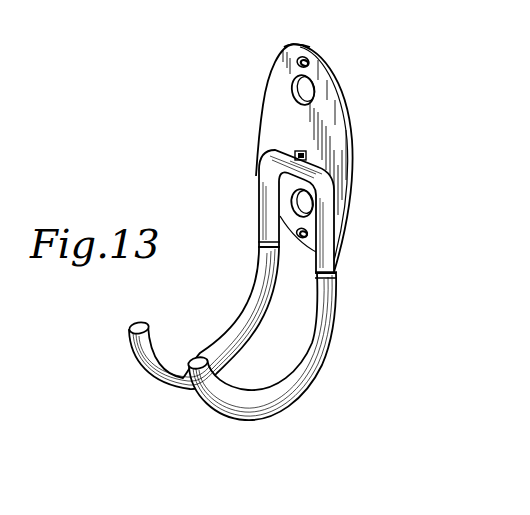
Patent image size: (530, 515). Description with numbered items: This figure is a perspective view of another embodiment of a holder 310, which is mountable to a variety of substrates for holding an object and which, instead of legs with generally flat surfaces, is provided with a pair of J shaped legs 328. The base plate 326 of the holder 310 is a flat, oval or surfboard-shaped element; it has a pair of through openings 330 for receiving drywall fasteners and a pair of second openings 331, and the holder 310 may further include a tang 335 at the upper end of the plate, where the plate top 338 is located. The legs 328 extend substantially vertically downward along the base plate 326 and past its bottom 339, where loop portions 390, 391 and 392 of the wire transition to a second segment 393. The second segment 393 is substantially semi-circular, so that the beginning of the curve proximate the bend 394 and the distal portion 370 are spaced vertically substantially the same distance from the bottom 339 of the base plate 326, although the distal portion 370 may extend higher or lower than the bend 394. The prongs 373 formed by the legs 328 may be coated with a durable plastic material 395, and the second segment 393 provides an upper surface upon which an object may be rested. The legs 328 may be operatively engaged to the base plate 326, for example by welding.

The J hook holder 310 is at (384, 115).
The base plate 326 is at (265, 113).
The J shaped leg 328 is at (328, 338).
The through opening 330 is at (295, 88).
The second opening 331 is at (298, 60).
The tab 335 is at (296, 155).
The upper end of plate 338 is at (300, 43).
The bottom of base plate 339 is at (337, 271).
The distal portion 370 is at (172, 380).
The hook prong 373 is at (130, 336).
The wire loop leg 390 is at (260, 221).
The loop top portion 391 is at (321, 164).
The second segment 392 is at (262, 180).
The second segment 393 is at (233, 331).
The bend 394 is at (257, 286).
The durable plastic material 395 is at (248, 311).